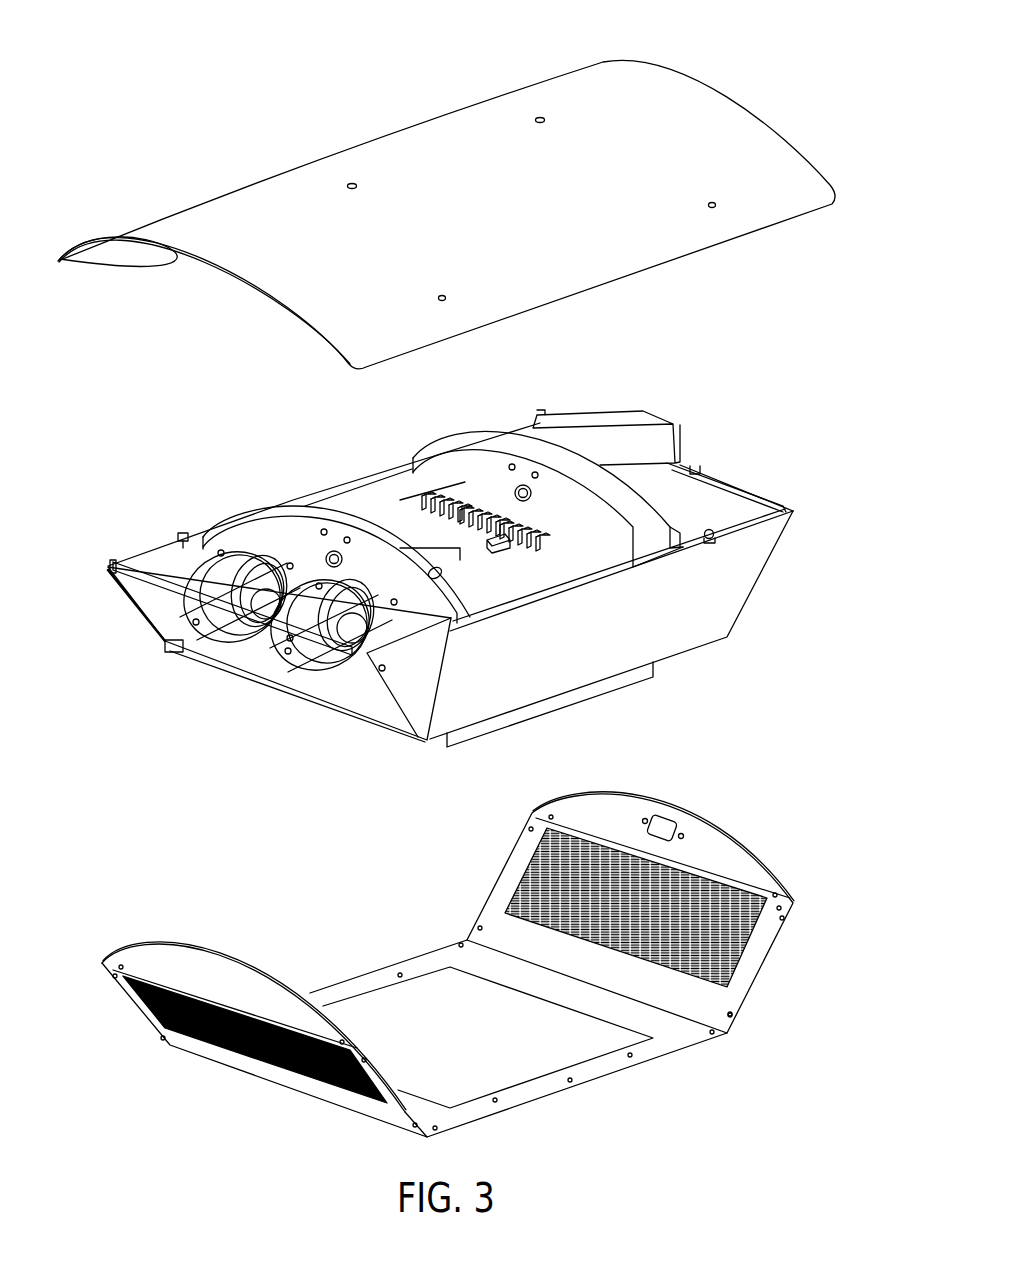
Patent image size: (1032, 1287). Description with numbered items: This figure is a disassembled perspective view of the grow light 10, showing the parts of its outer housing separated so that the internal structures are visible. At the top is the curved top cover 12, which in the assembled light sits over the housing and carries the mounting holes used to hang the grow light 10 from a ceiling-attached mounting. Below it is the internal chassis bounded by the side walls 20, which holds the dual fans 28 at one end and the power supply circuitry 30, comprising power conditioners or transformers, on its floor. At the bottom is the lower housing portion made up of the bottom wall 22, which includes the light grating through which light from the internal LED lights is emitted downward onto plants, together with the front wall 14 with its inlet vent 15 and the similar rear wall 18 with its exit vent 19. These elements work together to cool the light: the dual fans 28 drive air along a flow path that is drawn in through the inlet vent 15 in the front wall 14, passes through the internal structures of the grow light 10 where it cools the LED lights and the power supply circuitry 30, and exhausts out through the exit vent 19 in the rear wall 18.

The grow light 10 is at (282, 82).
The curved top cover 12 is at (547, 229).
The front wall 14 is at (173, 1047).
The inlet vent 15 is at (155, 1017).
The rear wall 18 is at (755, 997).
The exit vent 19 is at (720, 885).
The side walls 20 is at (340, 481).
The bottom wall 22 is at (679, 1055).
The dual fans 28 is at (295, 665).
The power supply circuitry 30 is at (535, 565).